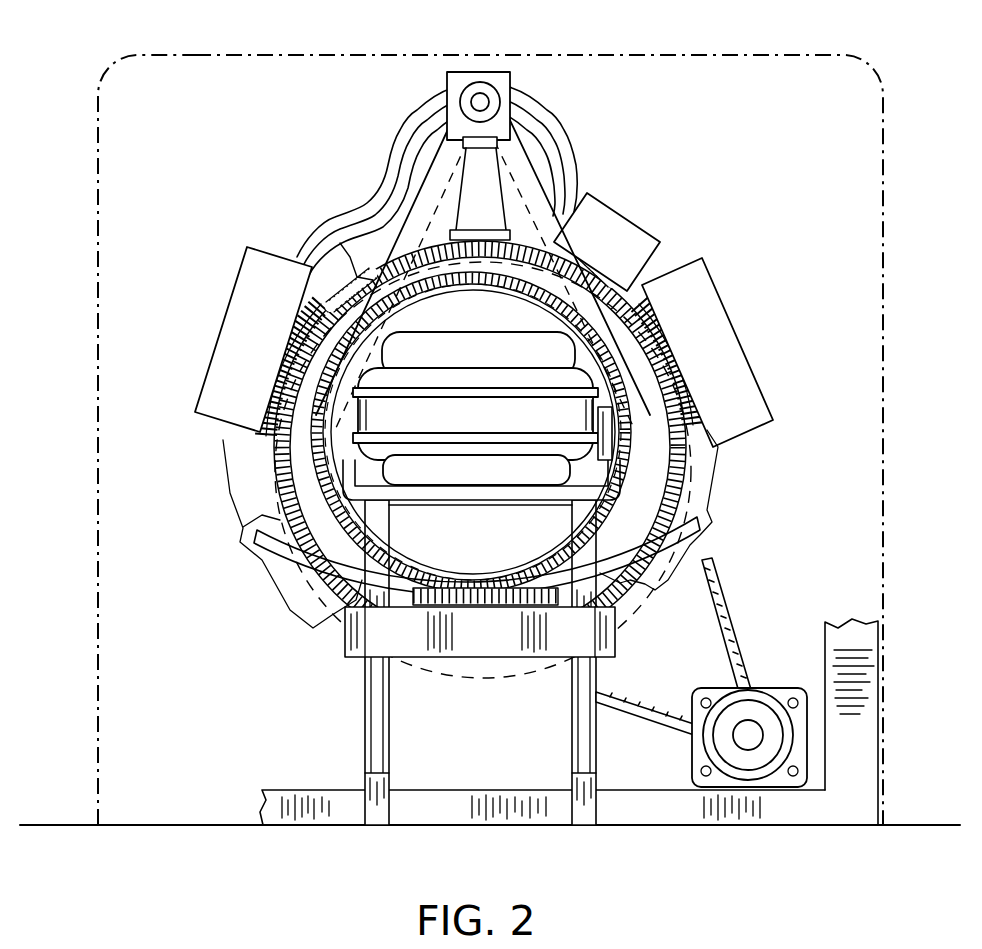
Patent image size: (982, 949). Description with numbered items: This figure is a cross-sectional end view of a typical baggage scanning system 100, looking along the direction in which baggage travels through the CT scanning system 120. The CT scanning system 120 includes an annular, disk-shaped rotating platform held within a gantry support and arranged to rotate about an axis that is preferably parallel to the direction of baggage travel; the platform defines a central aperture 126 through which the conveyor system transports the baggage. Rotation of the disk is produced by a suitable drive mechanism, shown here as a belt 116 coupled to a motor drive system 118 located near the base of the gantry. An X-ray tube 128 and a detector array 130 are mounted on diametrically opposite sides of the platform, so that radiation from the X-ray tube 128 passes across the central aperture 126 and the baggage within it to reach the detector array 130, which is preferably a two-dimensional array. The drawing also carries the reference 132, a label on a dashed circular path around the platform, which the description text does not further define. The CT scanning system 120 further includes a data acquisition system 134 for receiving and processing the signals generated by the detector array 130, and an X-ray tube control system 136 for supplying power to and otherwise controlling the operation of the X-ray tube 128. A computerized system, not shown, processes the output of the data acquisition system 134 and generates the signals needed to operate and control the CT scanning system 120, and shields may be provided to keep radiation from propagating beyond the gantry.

The baggage scanning system 100 is at (242, 878).
The belt 116 is at (733, 592).
The motor drive system 118 is at (750, 730).
The CT scanning system 120 is at (194, 53).
The central aperture 126 is at (505, 548).
The X-ray tube 128 is at (466, 80).
The detector array 130 is at (274, 522).
The pivot path 132 is at (726, 477).
The data acquisition system 134 is at (346, 637).
The X-ray tube control system 136 is at (244, 299).